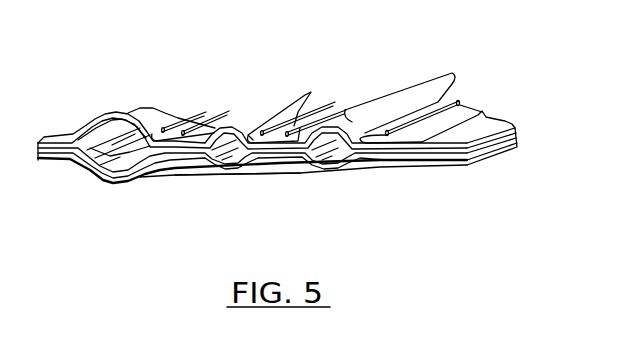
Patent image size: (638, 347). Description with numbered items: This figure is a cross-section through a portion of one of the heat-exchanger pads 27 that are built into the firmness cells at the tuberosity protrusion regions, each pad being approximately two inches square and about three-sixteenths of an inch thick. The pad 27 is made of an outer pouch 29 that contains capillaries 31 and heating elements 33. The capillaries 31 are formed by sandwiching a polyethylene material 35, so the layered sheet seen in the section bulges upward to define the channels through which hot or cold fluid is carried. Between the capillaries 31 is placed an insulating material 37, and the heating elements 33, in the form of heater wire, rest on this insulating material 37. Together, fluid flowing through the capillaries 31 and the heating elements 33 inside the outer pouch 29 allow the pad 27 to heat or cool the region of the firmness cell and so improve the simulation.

The pad 27 is at (277, 144).
The outer pouch 29 is at (312, 175).
The capillaries 31 is at (234, 124).
The heating elements 33 is at (387, 137).
The polyethylene material 35 is at (118, 114).
The insulating material 37 is at (153, 138).